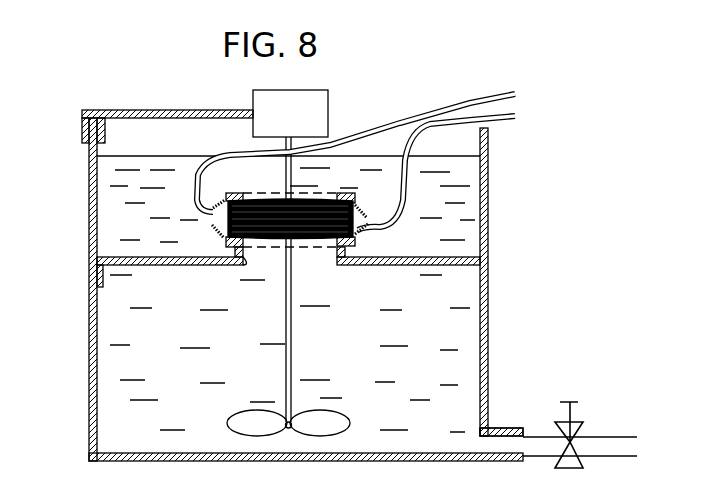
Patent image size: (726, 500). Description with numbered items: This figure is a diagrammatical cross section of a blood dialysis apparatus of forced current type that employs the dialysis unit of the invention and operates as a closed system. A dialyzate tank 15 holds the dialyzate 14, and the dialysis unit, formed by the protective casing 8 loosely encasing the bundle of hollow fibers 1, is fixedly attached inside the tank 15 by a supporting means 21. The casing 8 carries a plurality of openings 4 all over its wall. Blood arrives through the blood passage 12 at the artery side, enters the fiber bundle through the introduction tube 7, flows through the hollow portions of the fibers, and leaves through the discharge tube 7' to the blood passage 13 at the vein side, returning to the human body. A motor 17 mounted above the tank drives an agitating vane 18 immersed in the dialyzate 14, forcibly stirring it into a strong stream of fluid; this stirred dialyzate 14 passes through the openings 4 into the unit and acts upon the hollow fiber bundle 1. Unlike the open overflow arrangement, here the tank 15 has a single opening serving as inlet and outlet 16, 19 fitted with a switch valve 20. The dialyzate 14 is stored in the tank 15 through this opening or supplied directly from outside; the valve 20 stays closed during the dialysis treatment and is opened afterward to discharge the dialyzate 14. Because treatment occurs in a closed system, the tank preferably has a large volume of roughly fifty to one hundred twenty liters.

The bundle of hollow fibers 1 is at (305, 236).
The openings 4 is at (266, 247).
The introduction tube 7 is at (375, 200).
The discharge tube 7' is at (194, 223).
The protective casing 8 is at (260, 248).
The blood passage at artery side 12 is at (507, 118).
The blood passage at vein side 13 is at (478, 98).
The dialyzate 14 is at (467, 218).
The dialyzate tank 15 is at (89, 257).
The inlet 16 is at (502, 443).
The outlet 19 is at (501, 432).
The motor 17 is at (290, 113).
The agitating vane 18 is at (315, 418).
The valve 20 is at (580, 418).
The supporting means 21 is at (247, 265).